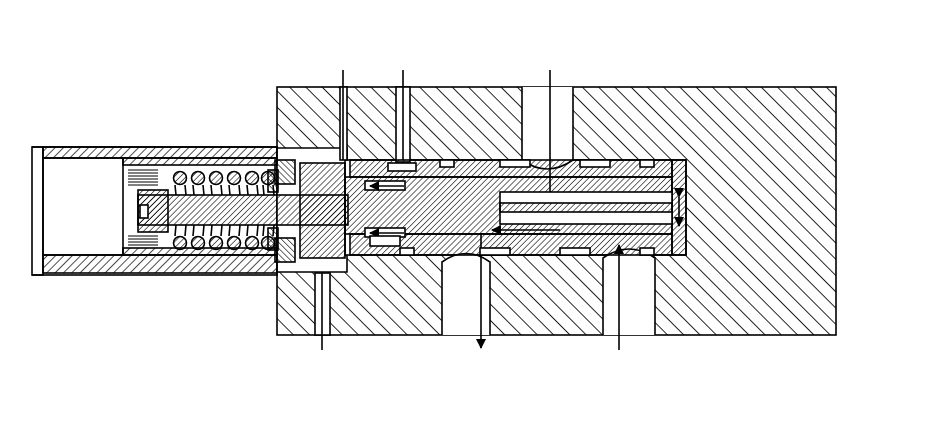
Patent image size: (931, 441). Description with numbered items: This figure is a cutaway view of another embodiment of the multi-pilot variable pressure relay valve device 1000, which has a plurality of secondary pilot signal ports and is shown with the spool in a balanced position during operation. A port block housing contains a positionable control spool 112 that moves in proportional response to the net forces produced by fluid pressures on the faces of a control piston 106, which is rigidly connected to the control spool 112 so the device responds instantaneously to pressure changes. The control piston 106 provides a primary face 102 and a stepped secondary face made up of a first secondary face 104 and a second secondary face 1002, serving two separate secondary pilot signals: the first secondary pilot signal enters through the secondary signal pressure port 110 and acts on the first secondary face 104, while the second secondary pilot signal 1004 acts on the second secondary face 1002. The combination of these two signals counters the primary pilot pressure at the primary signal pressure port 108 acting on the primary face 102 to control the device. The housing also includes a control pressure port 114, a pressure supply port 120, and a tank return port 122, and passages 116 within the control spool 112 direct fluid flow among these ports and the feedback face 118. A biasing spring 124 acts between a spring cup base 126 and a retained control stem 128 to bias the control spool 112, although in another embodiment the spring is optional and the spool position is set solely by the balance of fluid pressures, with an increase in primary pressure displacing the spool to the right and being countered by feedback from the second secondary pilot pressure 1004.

The multi-pilot variable pressure relay valve device 1000 is at (150, 60).
The second secondary face 1002 is at (346, 250).
The second secondary pilot signal 1004 is at (338, 74).
The primary face 102 is at (270, 263).
The first secondary face 104 is at (372, 244).
The control piston 106 is at (300, 170).
The primary signal pressure port 108 is at (310, 347).
The secondary signal pressure port 110 is at (407, 70).
The control spool 112 is at (470, 165).
The control pressure port 114 is at (562, 80).
The passages 116 is at (610, 170).
The feedback face 118 is at (688, 172).
The pressure supply port 120 is at (652, 344).
The tank return port 122 is at (496, 344).
The biasing spring 124 is at (210, 190).
The spring cup base 126 is at (270, 186).
The control stem 128 is at (140, 223).